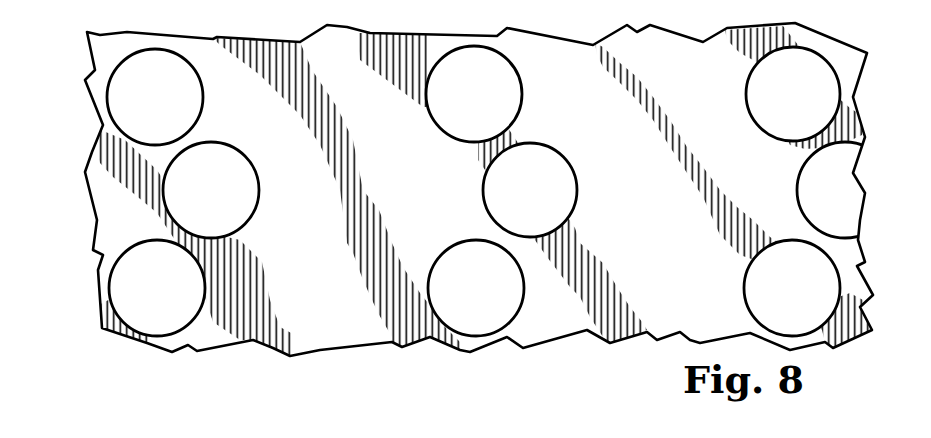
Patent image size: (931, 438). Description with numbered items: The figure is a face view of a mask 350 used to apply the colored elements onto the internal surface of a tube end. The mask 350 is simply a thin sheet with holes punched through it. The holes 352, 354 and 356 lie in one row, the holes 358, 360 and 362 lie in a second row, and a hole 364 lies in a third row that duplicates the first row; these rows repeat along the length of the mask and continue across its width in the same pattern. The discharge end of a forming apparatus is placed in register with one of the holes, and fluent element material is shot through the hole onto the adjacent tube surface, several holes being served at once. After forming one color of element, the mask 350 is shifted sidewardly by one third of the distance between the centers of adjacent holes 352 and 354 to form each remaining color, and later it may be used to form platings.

The mask 350 is at (93, 210).
The hole 352 is at (203, 90).
The hole 354 is at (522, 86).
The hole 356 is at (746, 98).
The hole 358 is at (259, 188).
The hole 360 is at (577, 186).
The hole 362 is at (797, 192).
The hole 364 is at (205, 284).